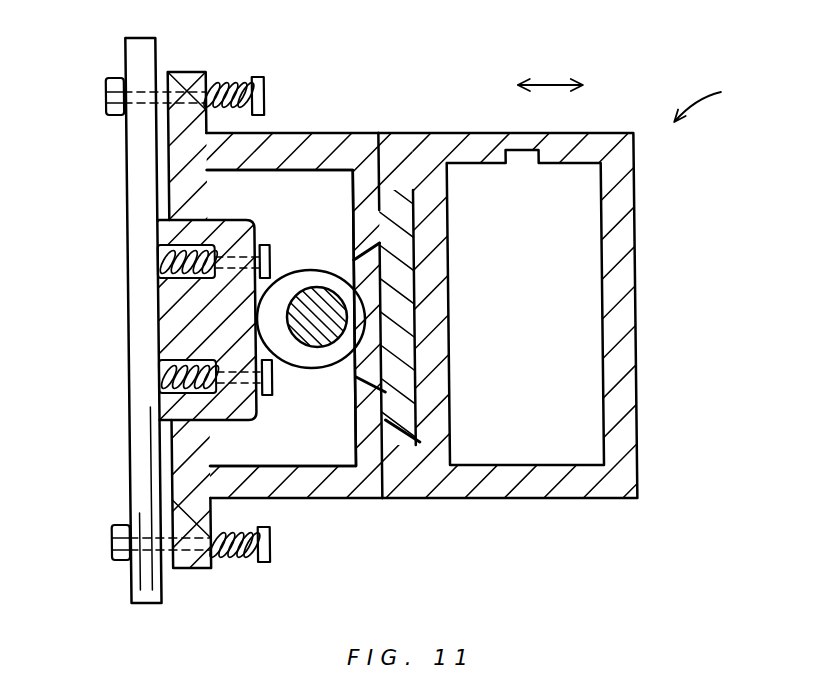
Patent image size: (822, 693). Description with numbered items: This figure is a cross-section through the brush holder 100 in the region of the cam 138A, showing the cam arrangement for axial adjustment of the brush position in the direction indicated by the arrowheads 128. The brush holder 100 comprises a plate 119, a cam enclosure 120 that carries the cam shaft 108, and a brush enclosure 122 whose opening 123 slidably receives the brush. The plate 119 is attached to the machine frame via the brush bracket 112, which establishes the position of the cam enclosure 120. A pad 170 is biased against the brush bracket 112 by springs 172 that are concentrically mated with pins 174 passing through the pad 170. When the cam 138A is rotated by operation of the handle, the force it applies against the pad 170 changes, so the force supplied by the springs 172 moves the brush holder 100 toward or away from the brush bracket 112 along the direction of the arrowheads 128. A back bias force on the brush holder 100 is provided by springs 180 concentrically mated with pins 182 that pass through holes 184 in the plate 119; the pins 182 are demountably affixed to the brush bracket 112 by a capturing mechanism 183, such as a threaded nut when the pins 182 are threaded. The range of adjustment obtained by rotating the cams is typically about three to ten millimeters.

The brush holder 100 is at (721, 99).
The cam shaft 108 is at (321, 348).
The brush bracket 112 is at (126, 479).
The plate 119 is at (184, 177).
The cam enclosure 120 is at (337, 505).
The brush enclosure 122 is at (632, 303).
The opening 123 is at (512, 445).
The arrowheads 128 is at (552, 85).
The cam 138A is at (314, 269).
The pad 170 is at (182, 311).
The springs 172 is at (156, 257).
The pins 174 is at (296, 231).
The springs 180 is at (223, 97).
The pins 182 is at (263, 97).
The capturing mechanism 183 is at (118, 78).
The holes 184 is at (185, 72).